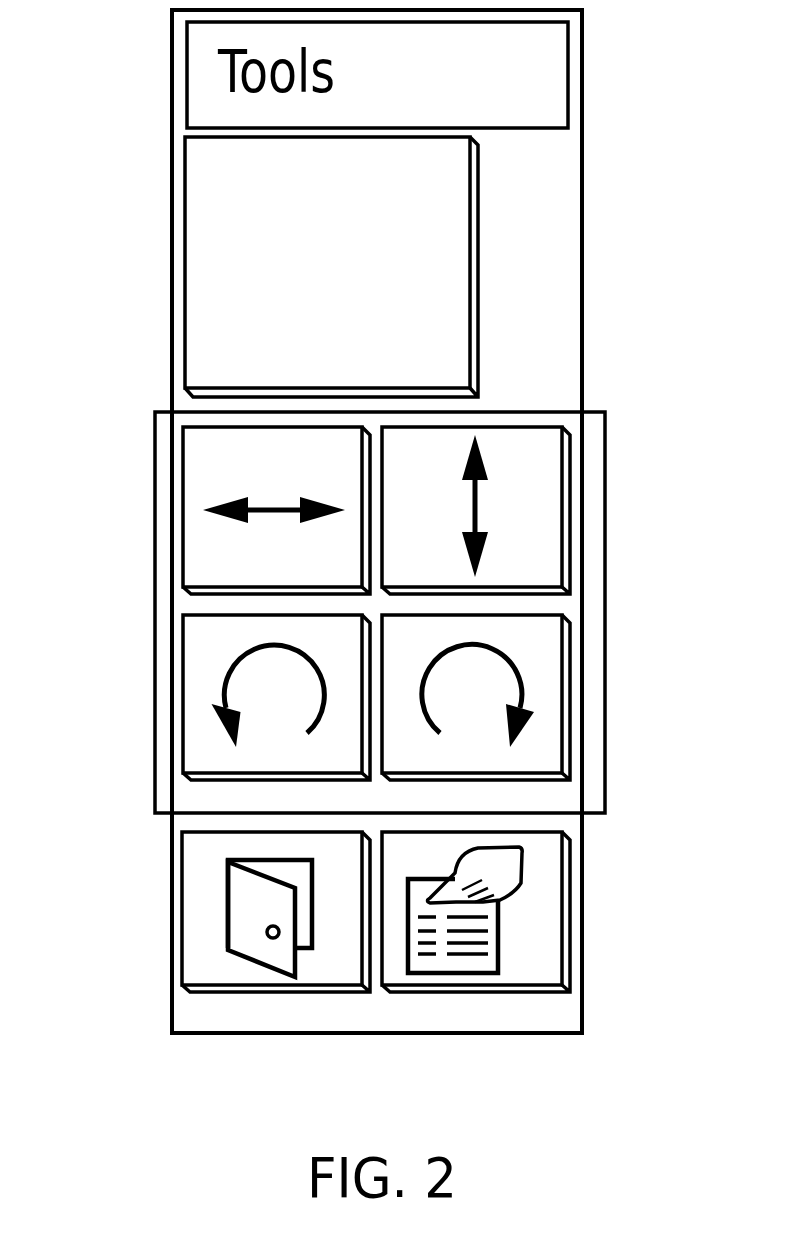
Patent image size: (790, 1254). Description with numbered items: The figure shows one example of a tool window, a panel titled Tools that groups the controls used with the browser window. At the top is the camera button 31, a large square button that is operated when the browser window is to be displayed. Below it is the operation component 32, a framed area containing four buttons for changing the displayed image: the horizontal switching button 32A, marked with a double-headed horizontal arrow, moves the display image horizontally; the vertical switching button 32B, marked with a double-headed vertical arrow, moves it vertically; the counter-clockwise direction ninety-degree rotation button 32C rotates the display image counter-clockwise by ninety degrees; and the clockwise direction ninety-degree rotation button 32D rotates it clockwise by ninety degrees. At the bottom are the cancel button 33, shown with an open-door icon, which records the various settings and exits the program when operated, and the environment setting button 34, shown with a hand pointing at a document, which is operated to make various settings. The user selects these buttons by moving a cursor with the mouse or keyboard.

The camera button 31 is at (217, 270).
The operation component 32 is at (610, 442).
The horizontal switching button 32A is at (215, 551).
The vertical switching button 32B is at (528, 530).
The counter-clockwise direction 90-degree rotation button 32C is at (215, 655).
The clockwise direction 90-degree rotation button 32D is at (528, 651).
The cancel button 33 is at (213, 908).
The environment setting button 34 is at (528, 917).